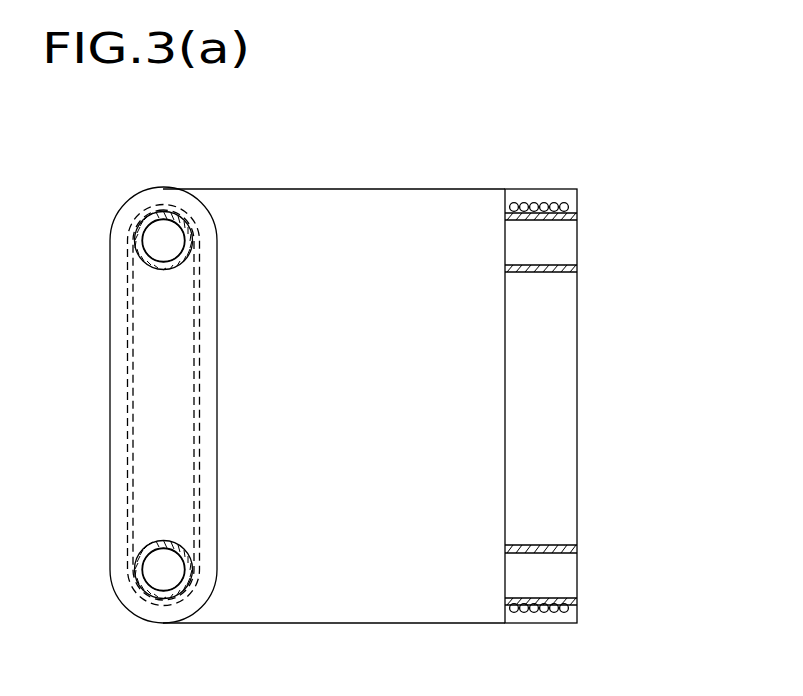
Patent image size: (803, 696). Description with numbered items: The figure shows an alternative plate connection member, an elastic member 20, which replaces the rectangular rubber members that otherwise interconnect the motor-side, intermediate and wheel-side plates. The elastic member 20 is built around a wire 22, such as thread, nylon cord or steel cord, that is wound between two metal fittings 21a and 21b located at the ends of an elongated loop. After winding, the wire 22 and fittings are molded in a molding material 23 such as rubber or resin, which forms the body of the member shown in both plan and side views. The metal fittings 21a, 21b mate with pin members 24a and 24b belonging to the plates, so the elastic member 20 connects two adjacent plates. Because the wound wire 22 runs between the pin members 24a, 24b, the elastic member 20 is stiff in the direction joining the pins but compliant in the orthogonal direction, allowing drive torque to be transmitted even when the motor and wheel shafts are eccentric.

The elastic member 20 is at (285, 258).
The metal fitting 21a is at (188, 213).
The metal fitting 21b is at (164, 544).
The wire 22 is at (200, 408).
The molding material 23 is at (173, 357).
The pin member 24a is at (168, 241).
The pin member 24b is at (168, 570).